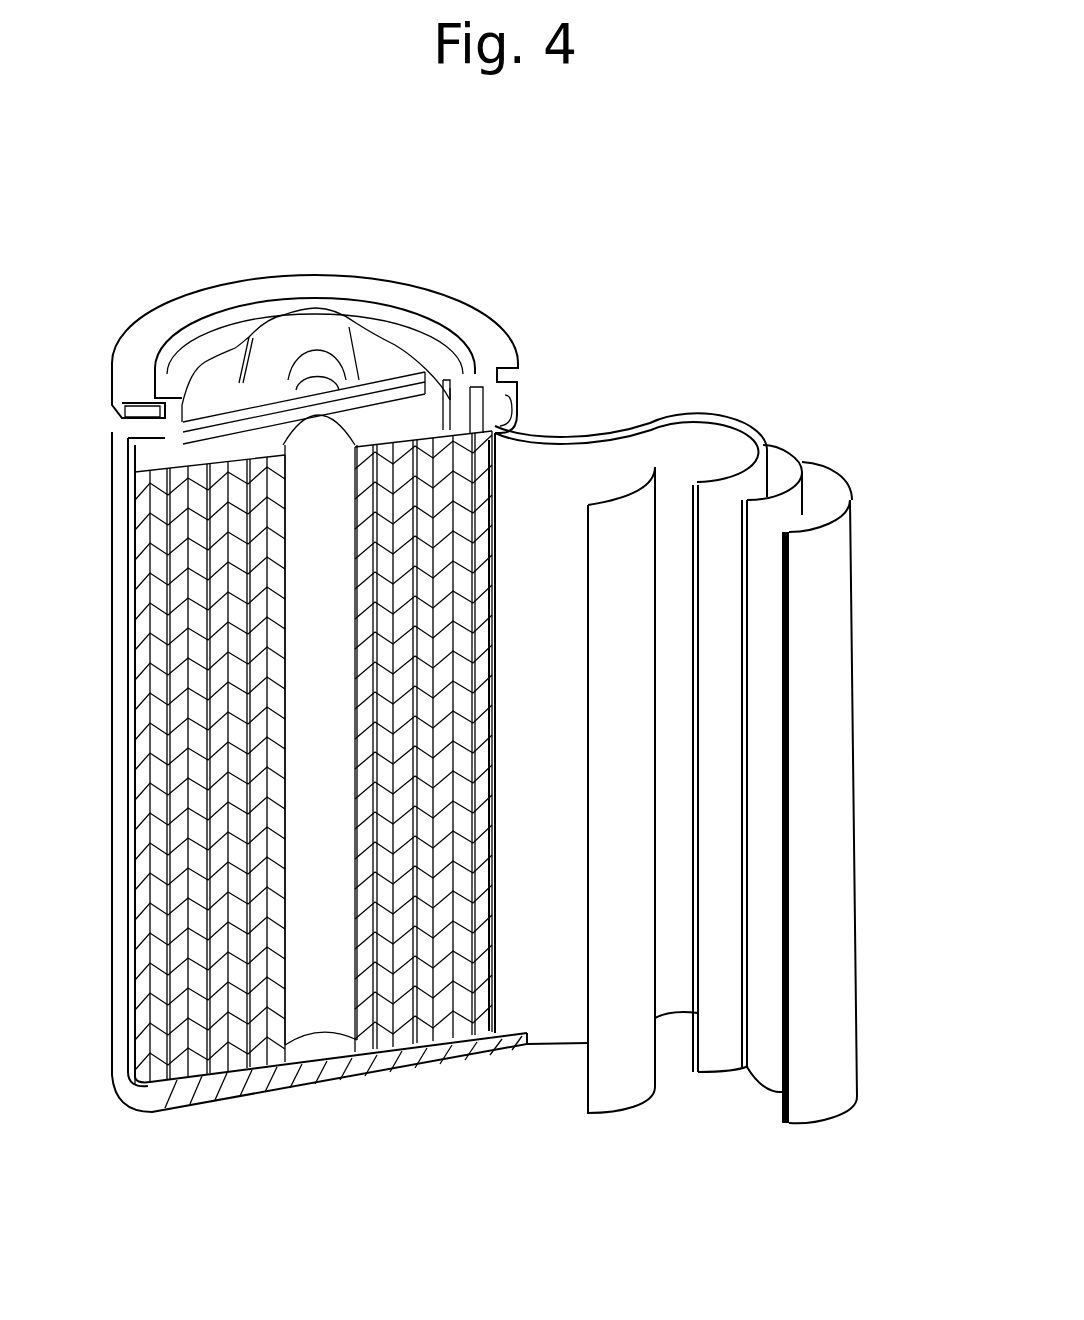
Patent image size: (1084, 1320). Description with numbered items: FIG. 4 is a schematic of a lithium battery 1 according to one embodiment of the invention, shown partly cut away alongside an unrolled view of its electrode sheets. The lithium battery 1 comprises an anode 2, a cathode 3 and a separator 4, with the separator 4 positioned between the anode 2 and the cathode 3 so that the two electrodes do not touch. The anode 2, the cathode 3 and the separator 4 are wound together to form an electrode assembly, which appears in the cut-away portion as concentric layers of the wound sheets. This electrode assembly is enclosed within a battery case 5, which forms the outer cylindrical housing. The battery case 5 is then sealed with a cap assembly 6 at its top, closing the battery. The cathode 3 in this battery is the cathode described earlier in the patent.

The lithium battery 1 is at (822, 378).
The anode 2 is at (838, 620).
The cathode 3 is at (720, 496).
The separator 4 is at (800, 500).
The battery case 5 is at (118, 1013).
The cap assembly 6 is at (328, 318).